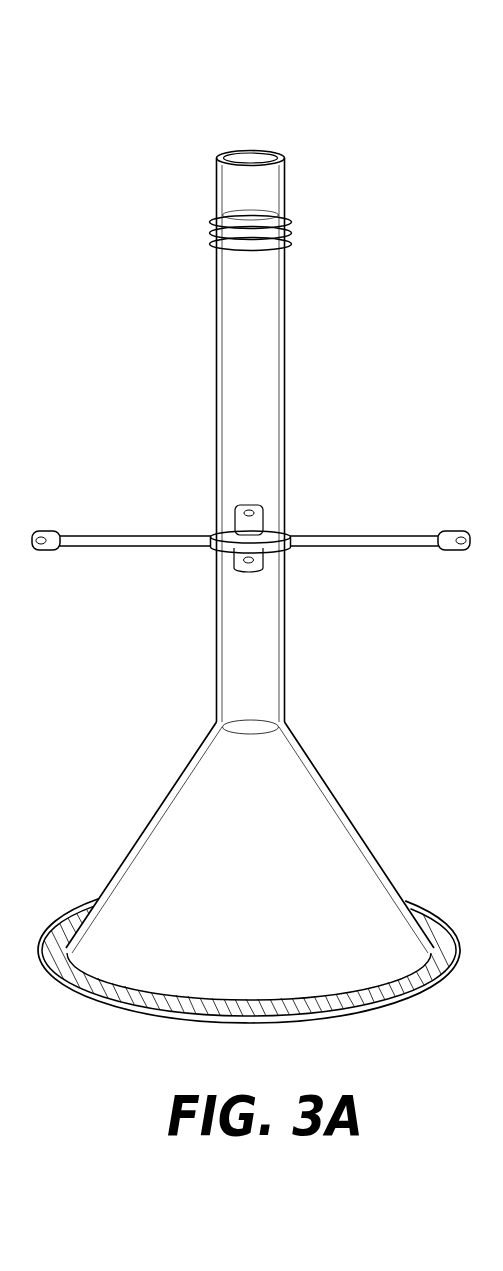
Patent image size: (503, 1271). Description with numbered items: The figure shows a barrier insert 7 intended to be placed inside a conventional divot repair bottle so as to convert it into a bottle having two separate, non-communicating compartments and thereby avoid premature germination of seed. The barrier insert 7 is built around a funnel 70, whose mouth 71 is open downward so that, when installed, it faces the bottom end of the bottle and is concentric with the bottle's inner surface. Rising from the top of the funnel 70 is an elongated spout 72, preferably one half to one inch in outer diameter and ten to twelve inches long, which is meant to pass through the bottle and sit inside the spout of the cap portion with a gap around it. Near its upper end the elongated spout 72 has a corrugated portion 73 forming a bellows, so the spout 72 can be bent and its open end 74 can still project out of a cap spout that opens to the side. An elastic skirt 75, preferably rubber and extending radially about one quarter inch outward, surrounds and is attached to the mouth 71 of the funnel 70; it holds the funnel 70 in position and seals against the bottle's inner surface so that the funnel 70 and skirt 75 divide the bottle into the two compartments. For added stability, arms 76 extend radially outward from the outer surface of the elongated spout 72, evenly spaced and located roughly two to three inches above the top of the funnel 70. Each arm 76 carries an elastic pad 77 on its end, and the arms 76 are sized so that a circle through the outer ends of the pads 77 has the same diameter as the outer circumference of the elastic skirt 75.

The barrier insert 7 is at (284, 641).
The funnel 70 is at (350, 817).
The mouth 71 is at (440, 937).
The elongated spout 72 is at (284, 437).
The corrugated portion 73 is at (211, 242).
The open end 74 is at (219, 154).
The elastic skirt 75 is at (429, 995).
The arms 76 is at (140, 532).
The pad 77 is at (452, 551).